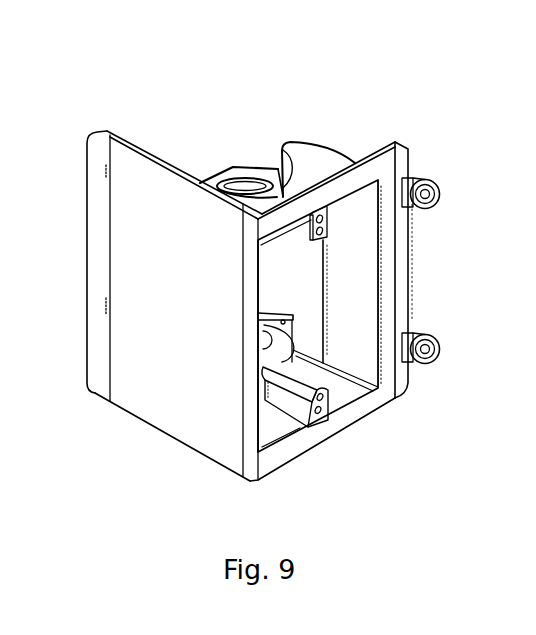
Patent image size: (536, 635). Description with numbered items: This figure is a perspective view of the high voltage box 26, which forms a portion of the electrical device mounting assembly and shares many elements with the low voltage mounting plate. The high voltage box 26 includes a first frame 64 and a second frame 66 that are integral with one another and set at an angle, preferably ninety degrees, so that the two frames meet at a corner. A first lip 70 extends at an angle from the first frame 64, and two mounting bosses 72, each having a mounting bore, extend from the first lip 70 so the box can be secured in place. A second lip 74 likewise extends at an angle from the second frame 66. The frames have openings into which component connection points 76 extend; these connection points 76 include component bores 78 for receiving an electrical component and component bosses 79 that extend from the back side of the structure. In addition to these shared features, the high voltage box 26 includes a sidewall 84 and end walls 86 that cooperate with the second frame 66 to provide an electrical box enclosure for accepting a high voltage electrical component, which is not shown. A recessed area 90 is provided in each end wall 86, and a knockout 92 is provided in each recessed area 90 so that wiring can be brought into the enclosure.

The high voltage box 26 is at (112, 99).
The first frame 64 is at (327, 442).
The second frame 66 is at (175, 438).
The first lip 70 is at (401, 146).
The mounting bosses 72 is at (440, 188).
The second lip 74 is at (98, 382).
The component connection points 76 is at (326, 236).
The component bores 78 is at (328, 406).
The component bosses 79 is at (293, 383).
The sidewall 84 is at (359, 311).
The end walls 86 is at (318, 164).
The recessed area 90 is at (248, 175).
The knockout 92 is at (233, 182).